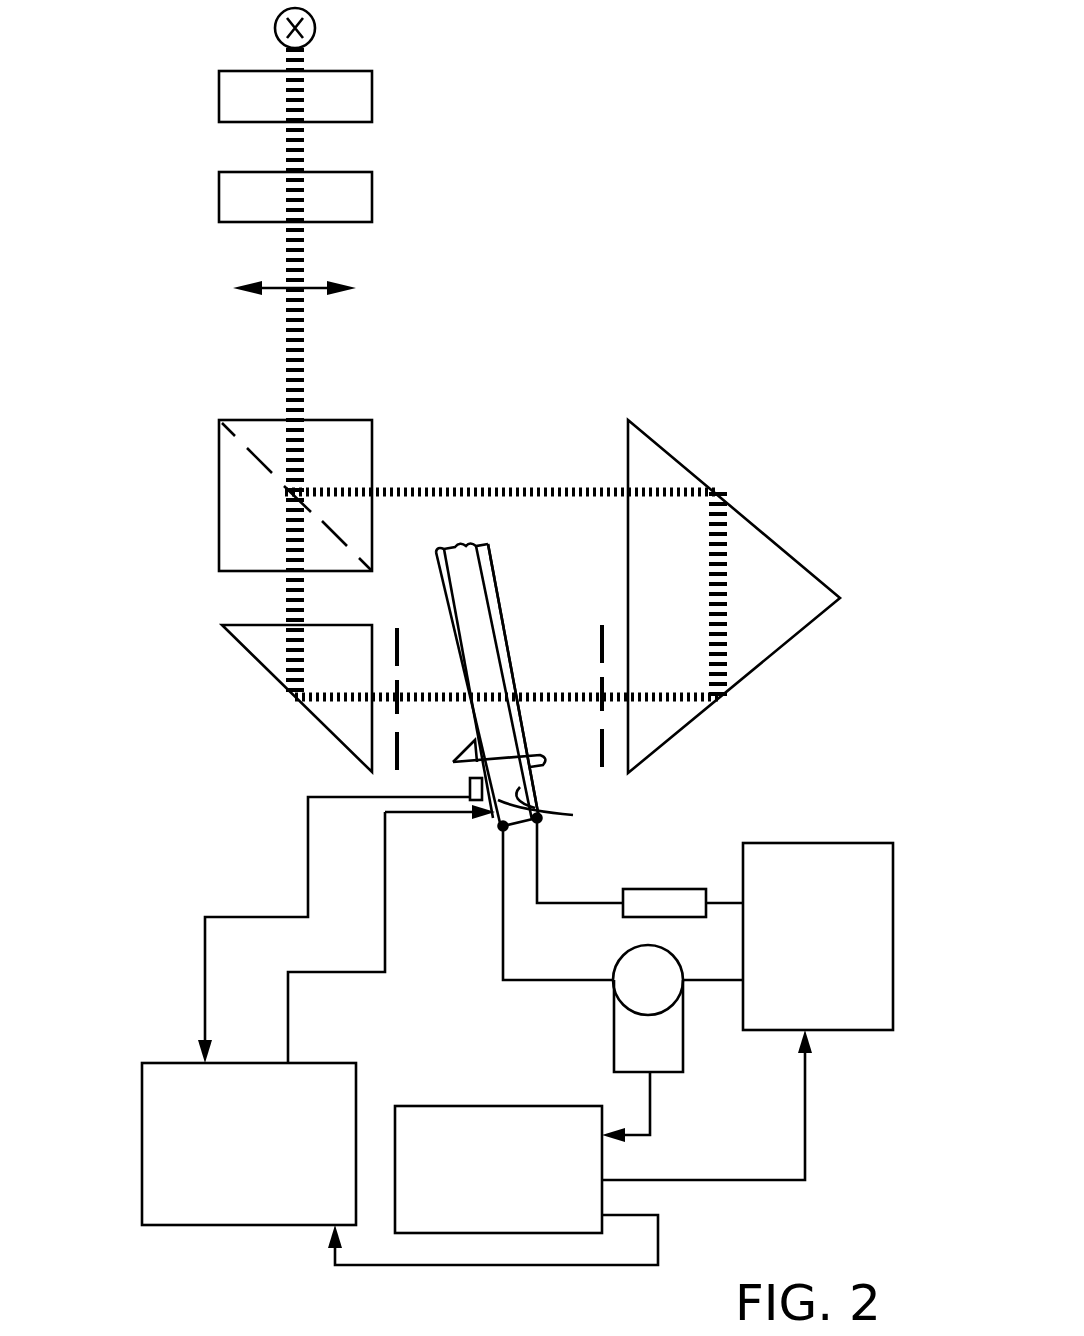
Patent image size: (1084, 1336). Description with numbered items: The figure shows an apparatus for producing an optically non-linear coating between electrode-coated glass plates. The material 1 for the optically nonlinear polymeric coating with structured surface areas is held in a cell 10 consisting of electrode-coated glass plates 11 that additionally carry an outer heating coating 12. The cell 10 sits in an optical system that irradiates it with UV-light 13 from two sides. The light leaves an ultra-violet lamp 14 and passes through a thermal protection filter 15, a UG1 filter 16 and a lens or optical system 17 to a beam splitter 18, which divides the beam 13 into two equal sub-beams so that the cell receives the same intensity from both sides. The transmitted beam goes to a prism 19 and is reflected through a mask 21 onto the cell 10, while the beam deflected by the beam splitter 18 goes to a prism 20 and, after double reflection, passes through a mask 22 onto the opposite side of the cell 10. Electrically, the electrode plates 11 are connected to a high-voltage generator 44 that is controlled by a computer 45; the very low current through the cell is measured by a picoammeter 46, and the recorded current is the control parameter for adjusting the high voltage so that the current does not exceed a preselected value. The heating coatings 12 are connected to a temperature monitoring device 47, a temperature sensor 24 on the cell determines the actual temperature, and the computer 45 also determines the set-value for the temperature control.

The material 1 is at (470, 578).
The cell 10 is at (523, 598).
The electrode-coated glass plates 11 is at (564, 813).
The outer heating coating 12 is at (480, 760).
The UV-light 13 is at (305, 355).
The ultra-violet lamp 14 is at (316, 25).
The thermal protection filter 15 is at (357, 93).
The UG1 filter 16 is at (360, 192).
The lens or optical system 17 is at (332, 282).
The beam splitter 18 is at (358, 440).
The prism 19 is at (340, 725).
The prism 20 is at (645, 445).
The mask 21 is at (397, 770).
The mask 22 is at (602, 745).
The temperature sensor 24 is at (470, 791).
The high-voltage generator 44 is at (835, 856).
The computer 45 is at (552, 1115).
The picoammeter 46 is at (633, 965).
The temperature monitoring device 47 is at (235, 1215).